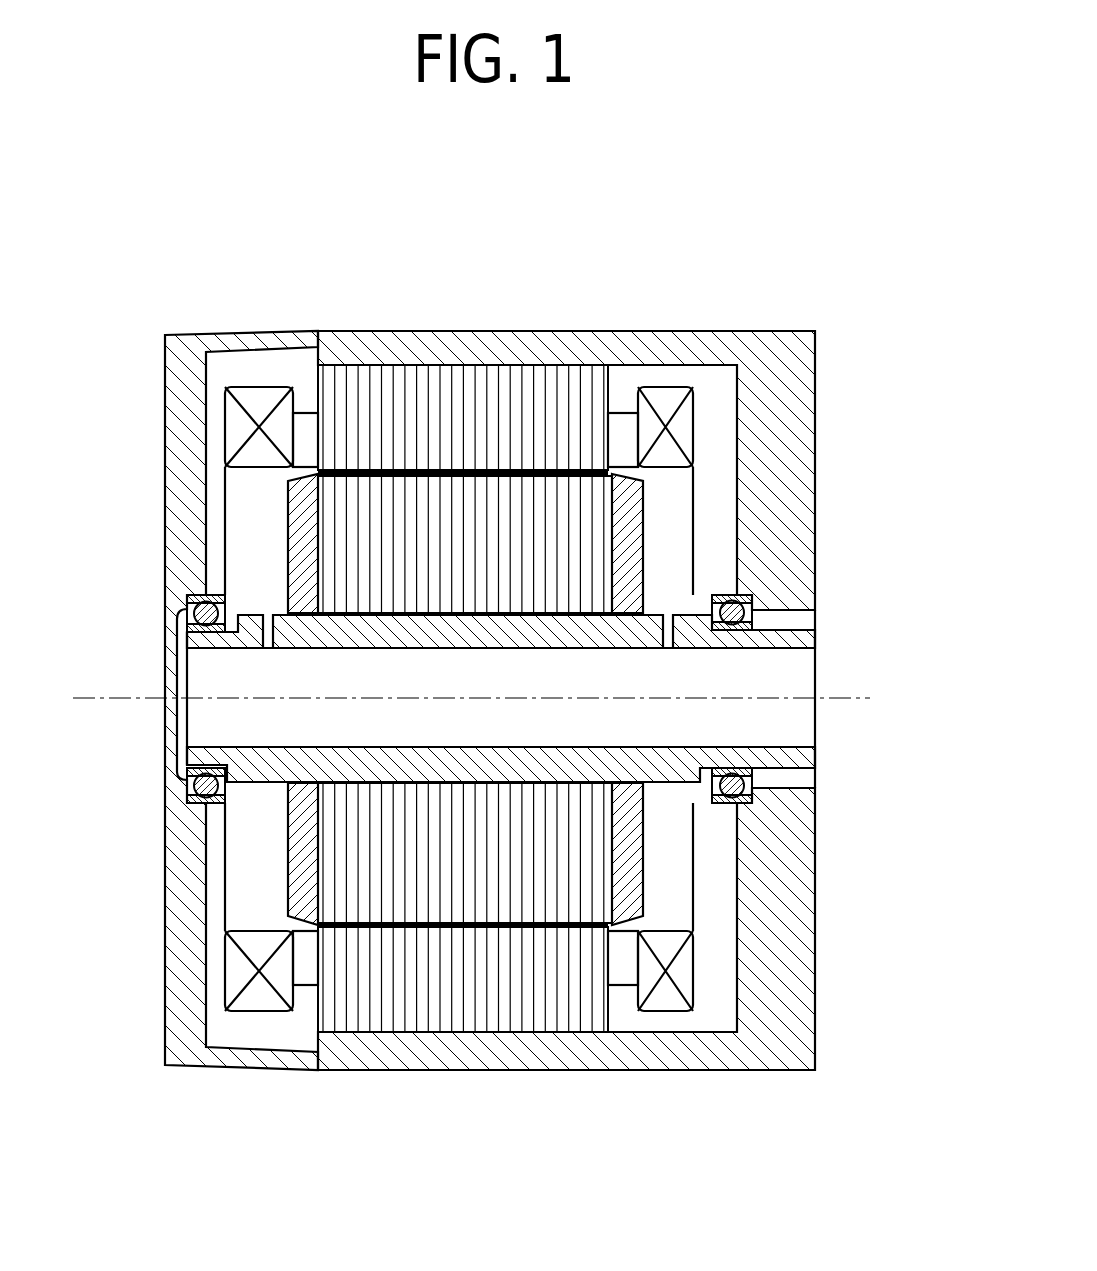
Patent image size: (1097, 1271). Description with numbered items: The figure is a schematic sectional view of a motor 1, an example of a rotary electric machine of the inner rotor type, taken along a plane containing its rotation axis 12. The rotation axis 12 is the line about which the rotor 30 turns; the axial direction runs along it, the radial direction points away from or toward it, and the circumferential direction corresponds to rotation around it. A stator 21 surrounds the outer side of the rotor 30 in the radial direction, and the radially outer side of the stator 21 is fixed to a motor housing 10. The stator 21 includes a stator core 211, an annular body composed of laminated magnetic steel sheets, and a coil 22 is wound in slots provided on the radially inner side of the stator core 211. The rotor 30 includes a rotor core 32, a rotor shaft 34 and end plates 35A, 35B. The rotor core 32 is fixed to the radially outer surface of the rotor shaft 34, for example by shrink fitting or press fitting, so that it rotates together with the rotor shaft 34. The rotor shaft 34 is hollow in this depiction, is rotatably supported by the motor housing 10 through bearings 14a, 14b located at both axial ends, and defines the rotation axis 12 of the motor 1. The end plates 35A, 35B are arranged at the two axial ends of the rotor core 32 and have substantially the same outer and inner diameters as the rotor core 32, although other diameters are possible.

The motor 1 is at (523, 223).
The motor housing 10 is at (789, 347).
The rotation axis 12 is at (102, 698).
The bearing 14a is at (200, 789).
The bearing 14b is at (740, 597).
The stator 21 is at (467, 400).
The stator core 211 is at (590, 382).
The coil 22 is at (303, 403).
The rotor 30 is at (279, 825).
The rotor core 32 is at (525, 485).
The rotor shaft 34 is at (690, 619).
The end plate 35A is at (305, 502).
The end plate 35B is at (628, 490).